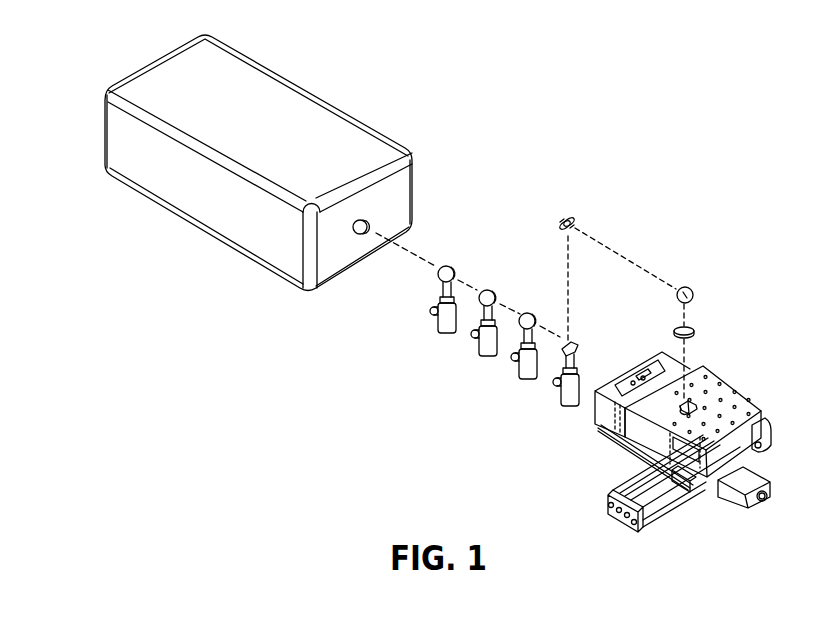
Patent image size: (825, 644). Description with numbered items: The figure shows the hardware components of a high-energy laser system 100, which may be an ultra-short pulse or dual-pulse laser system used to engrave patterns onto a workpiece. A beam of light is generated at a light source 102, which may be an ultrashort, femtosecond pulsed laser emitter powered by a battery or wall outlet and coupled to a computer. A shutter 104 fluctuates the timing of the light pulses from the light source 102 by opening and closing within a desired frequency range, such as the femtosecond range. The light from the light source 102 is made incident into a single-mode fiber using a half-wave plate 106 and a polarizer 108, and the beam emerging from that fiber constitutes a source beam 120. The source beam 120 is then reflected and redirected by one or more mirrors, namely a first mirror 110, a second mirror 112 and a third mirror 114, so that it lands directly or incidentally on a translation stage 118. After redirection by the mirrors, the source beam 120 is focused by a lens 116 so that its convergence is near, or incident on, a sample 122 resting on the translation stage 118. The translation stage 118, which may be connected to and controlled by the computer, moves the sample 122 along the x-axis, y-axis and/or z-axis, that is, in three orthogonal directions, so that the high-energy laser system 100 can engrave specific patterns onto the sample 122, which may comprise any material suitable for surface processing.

The high-energy laser system 100 is at (584, 144).
The light source 102 is at (265, 75).
The shutter 104 is at (448, 265).
The half-wave plate 106 is at (489, 289).
The polarizer 108 is at (523, 368).
The first mirror 110 is at (562, 398).
The second mirror 112 is at (558, 218).
The third mirror 114 is at (684, 287).
The lens 116 is at (694, 331).
The translation stage 118 is at (728, 392).
The source beam 120 is at (553, 333).
The sample 122 is at (691, 398).